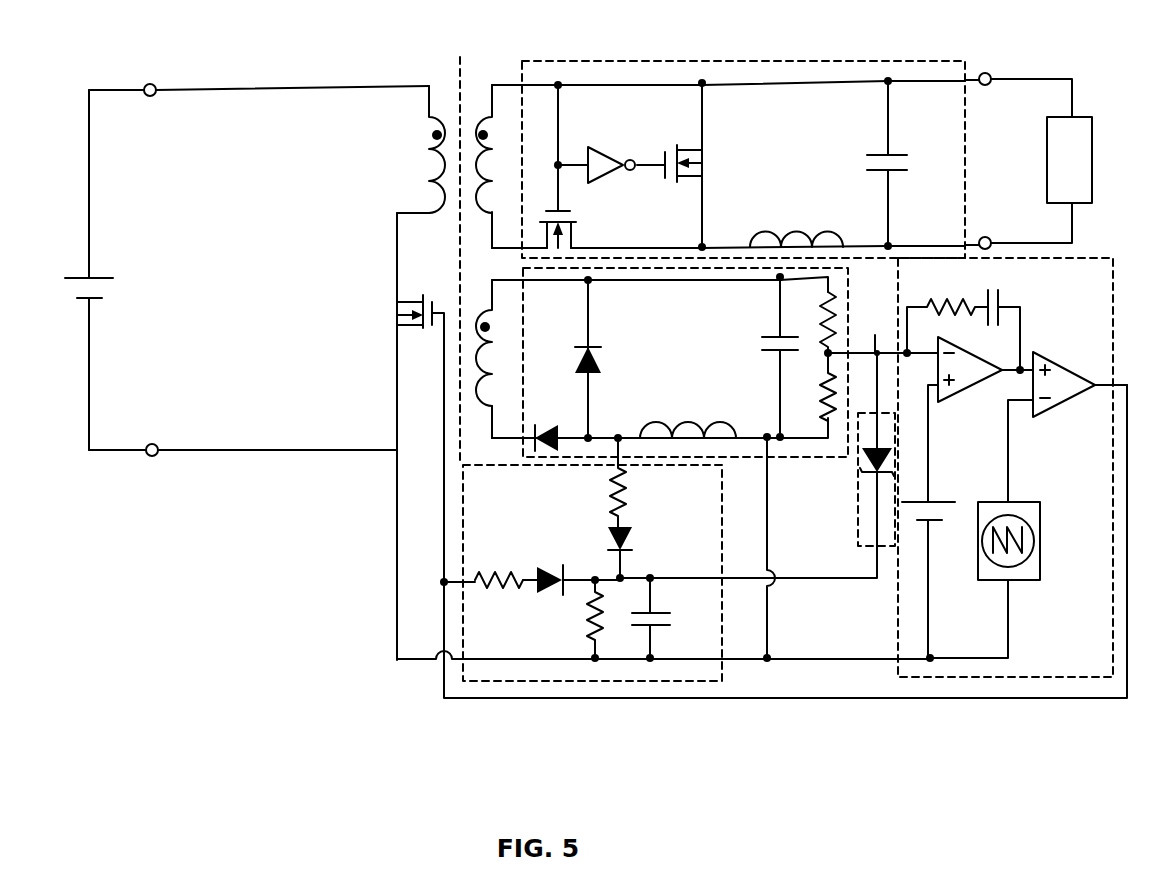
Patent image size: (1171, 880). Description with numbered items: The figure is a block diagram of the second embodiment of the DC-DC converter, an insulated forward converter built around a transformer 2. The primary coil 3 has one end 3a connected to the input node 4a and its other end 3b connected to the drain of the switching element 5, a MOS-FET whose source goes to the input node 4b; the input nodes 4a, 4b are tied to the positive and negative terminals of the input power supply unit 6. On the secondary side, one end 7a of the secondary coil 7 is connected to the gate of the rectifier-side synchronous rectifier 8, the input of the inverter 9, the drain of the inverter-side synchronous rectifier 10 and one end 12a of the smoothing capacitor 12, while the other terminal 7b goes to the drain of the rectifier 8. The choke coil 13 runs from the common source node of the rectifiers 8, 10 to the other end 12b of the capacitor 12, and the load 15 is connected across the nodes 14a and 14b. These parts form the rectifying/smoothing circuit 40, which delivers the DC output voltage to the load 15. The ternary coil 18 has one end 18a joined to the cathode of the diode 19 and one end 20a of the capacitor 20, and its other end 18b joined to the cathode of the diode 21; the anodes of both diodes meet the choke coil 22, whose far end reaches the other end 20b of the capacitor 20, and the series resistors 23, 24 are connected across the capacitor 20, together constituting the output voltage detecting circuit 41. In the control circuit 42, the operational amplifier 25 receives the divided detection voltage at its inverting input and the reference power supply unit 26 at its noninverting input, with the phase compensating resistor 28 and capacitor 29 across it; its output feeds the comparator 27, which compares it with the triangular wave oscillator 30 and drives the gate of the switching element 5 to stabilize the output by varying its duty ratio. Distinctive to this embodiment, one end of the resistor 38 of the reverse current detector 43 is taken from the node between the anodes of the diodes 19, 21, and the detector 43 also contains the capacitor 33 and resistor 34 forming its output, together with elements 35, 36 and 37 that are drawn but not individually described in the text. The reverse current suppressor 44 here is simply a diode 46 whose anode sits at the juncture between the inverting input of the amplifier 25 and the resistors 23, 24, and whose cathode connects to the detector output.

The transformer 2 is at (455, 57).
The primary coil 3 is at (440, 168).
The one end of primary coil 3a is at (429, 117).
The other end of primary coil 3b is at (397, 213).
The input node 4a is at (152, 84).
The input node 4b is at (153, 457).
The switching element 5 is at (395, 322).
The input power supply unit 6 is at (78, 278).
The secondary coil 7 is at (478, 168).
The one end of secondary coil 7a is at (492, 105).
The other terminal of secondary coil 7b is at (493, 212).
The rectifier-side synchronous rectifier 8 is at (572, 229).
The inverter 9 is at (602, 152).
The inverter-side synchronous rectifier 10 is at (712, 165).
The smoothing capacitor 12 is at (866, 160).
The one end of smoothing capacitor 12a is at (897, 150).
The other end of smoothing capacitor 12b is at (897, 175).
The choke coil 13 is at (794, 230).
The node 14a is at (987, 73).
The node 14b is at (987, 237).
The load 15 is at (1093, 140).
The ternary coil 18 is at (470, 355).
The one end of ternary coil 18a is at (495, 300).
The other end of ternary coil 18b is at (497, 415).
The diode 19 is at (600, 362).
The capacitor 20 is at (762, 343).
The one end of capacitor 20a is at (765, 315).
The other end of capacitor 20b is at (765, 372).
The diode 21 is at (552, 430).
The choke coil 22 is at (660, 425).
The resistor 23 is at (838, 306).
The resistor 24 is at (826, 398).
The operational amplifier 25 is at (954, 396).
The reference power supply unit 26 is at (940, 502).
The comparator 27 is at (1062, 358).
The resistor 28 is at (942, 305).
The capacitor 29 is at (1004, 300).
The triangular wave oscillator 30 is at (1041, 525).
The capacitor 33 is at (662, 618).
The resistor 34 is at (588, 624).
The diode 35 is at (550, 570).
The diode 36 is at (636, 538).
The resistor 37 is at (499, 592).
The resistor 38 is at (630, 506).
The rectifying/smoothing circuit 40 is at (706, 61).
The output voltage detecting circuit 41 is at (750, 458).
The control circuit 42 is at (1113, 322).
The reverse current detector 43 is at (575, 684).
The reverse current suppressor 44 is at (858, 522).
The diode 46 is at (860, 465).